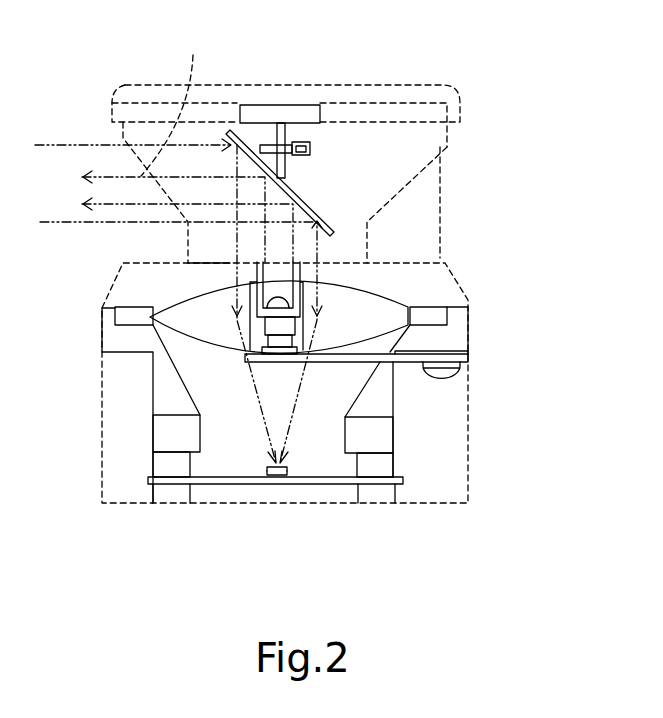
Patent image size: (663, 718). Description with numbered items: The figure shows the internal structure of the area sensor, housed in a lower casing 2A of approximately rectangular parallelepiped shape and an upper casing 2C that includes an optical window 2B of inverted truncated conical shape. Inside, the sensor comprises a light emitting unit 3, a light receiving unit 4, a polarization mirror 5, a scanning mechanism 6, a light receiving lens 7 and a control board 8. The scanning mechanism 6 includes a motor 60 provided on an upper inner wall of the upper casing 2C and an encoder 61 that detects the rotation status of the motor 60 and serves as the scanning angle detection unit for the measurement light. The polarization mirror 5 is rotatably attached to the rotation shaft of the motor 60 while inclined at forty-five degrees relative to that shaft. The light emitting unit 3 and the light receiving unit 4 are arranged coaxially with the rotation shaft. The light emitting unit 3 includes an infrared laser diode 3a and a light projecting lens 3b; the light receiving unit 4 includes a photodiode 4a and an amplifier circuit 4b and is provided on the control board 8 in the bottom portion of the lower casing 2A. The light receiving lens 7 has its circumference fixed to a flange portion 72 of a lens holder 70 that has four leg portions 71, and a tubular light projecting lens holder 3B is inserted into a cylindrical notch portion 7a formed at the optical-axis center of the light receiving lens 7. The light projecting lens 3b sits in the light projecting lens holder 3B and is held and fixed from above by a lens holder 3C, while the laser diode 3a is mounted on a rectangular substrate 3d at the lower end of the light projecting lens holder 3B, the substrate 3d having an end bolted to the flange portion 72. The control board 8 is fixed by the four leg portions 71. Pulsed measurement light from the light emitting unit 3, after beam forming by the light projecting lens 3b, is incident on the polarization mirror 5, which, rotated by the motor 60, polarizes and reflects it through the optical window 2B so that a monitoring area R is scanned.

The lower casing 2A is at (468, 388).
The optical window 2B is at (177, 101).
The upper casing 2C is at (458, 108).
The light emitting unit 3 is at (290, 306).
The laser diode 3a is at (278, 348).
The light projecting lens 3b is at (279, 317).
The light projecting lens holder 3B is at (298, 332).
The lens holder 3C is at (297, 276).
The substrate 3d is at (403, 362).
The light receiving unit 4 is at (280, 484).
The photodiode 4a is at (277, 469).
The amplifier circuit 4b is at (277, 473).
The polarization mirror 5 is at (305, 197).
The scanning mechanism 6 is at (272, 108).
The motor 60 is at (280, 141).
The encoder 61 is at (300, 142).
The light receiving lens 7 is at (183, 310).
The cylindrical notch portion 7a is at (250, 283).
The lens holder 70 is at (165, 408).
The leg portions 71 is at (167, 495).
The flange portion 72 is at (115, 313).
The control board 8 is at (217, 484).
The monitoring area R is at (35, 207).